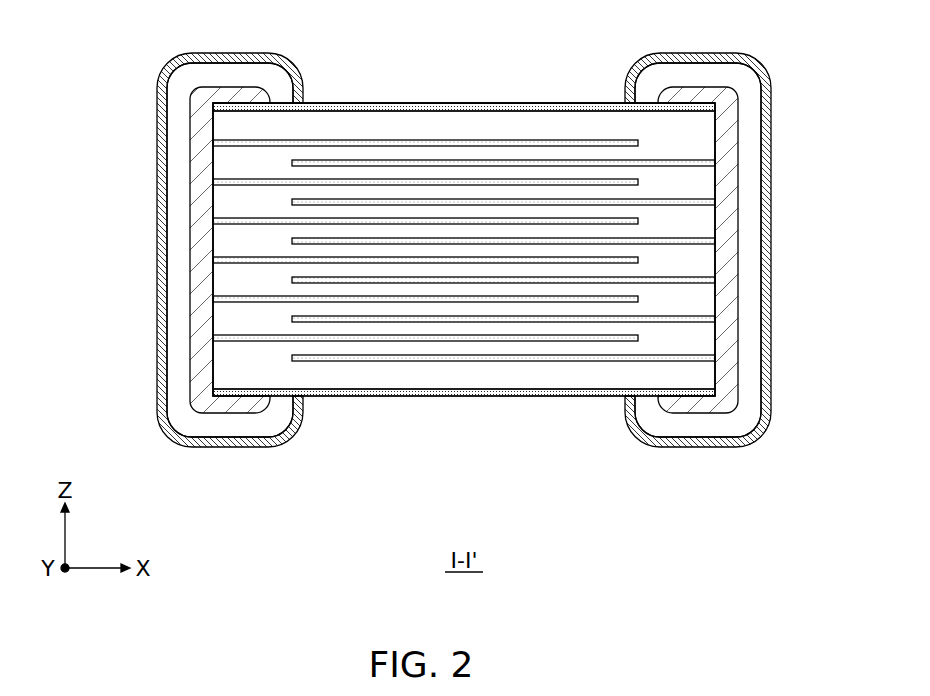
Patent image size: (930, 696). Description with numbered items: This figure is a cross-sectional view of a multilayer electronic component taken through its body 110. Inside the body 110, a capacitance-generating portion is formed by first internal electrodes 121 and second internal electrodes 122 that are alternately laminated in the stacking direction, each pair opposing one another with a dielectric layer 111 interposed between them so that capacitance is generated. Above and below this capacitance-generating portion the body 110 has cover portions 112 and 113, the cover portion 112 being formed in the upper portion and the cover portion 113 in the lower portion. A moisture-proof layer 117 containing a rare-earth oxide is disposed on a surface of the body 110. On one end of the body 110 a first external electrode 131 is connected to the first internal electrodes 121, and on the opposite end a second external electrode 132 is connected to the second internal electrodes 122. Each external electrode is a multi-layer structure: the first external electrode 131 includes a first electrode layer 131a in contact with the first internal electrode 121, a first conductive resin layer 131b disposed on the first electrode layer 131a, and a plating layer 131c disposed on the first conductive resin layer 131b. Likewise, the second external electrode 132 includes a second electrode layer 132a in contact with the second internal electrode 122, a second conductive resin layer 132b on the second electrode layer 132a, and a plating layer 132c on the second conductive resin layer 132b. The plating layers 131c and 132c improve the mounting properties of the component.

The body 110 is at (464, 251).
The dielectric layer 111 is at (545, 155).
The cover portion 112 is at (378, 127).
The cover portion 113 is at (513, 373).
The moisture-proof layer 117 is at (432, 102).
The first internal electrode 121 is at (488, 140).
The second internal electrode 122 is at (600, 160).
The first external electrode 131 is at (227, 303).
The first electrode layer 131a is at (205, 402).
The first conductive resin layer 131b is at (228, 427).
The plating layer 131c is at (239, 277).
The second external electrode 132 is at (702, 303).
The second electrode layer 132a is at (678, 403).
The second conductive resin layer 132b is at (702, 428).
The plating layer 132c is at (711, 277).